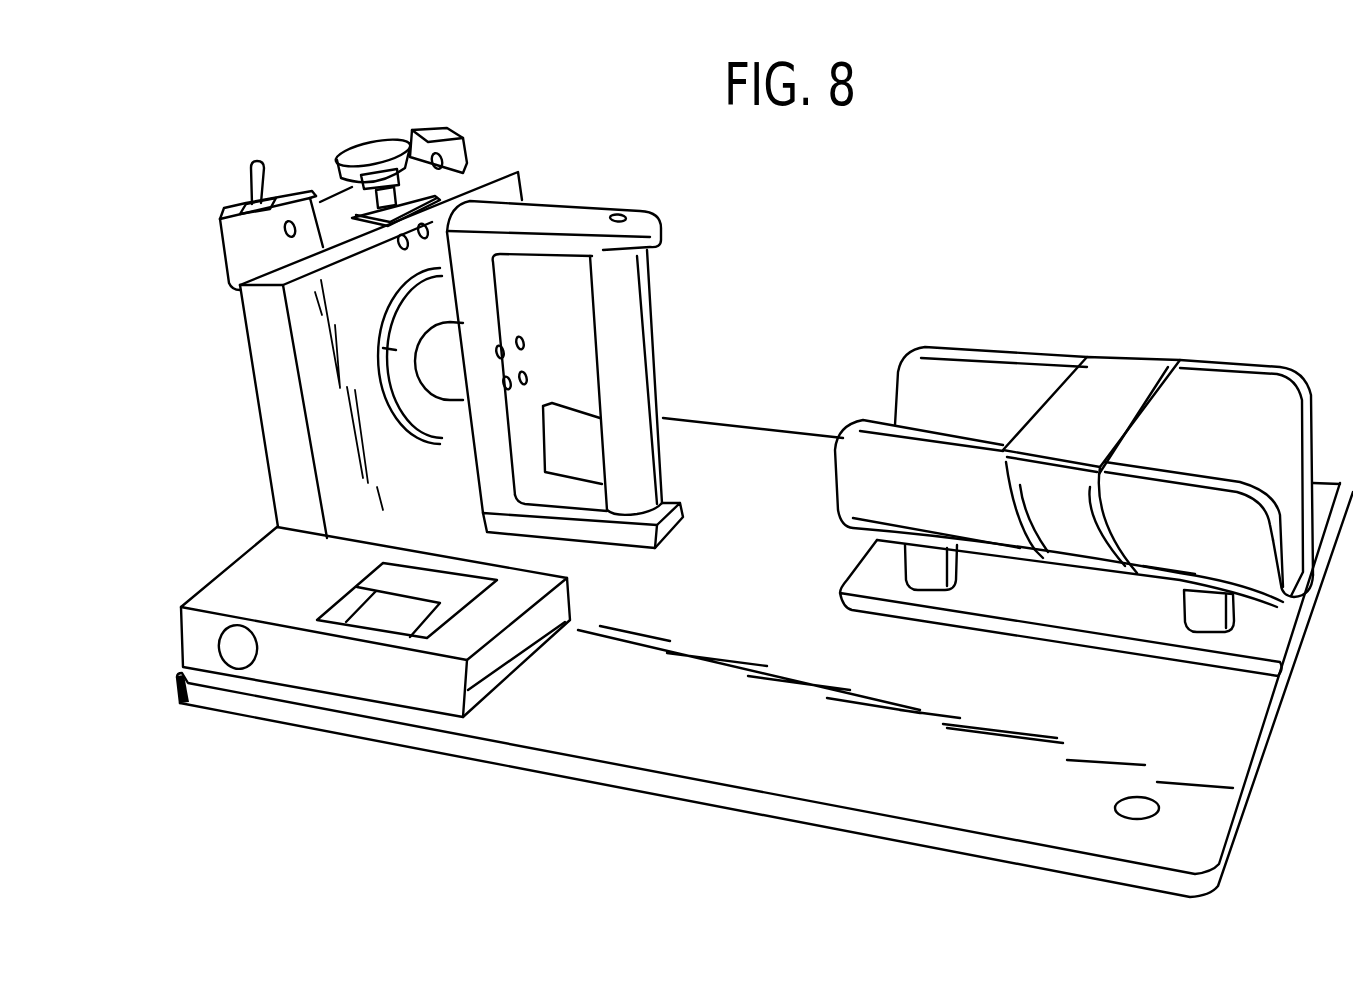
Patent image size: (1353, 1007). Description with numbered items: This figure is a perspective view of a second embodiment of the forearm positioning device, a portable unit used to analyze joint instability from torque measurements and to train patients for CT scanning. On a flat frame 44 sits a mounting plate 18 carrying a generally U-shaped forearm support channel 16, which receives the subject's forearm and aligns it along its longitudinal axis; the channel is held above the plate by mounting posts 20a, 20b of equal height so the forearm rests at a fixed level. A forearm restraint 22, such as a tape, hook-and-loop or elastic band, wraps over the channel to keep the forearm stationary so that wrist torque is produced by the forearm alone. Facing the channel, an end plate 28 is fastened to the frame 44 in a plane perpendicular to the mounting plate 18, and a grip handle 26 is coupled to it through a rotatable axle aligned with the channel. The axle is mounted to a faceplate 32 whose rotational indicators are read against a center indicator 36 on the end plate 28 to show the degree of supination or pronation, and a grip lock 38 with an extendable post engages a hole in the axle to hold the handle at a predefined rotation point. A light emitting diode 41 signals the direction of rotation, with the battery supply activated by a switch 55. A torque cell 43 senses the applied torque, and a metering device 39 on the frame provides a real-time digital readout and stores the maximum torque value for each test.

The forearm support channel 16 is at (1260, 362).
The mounting plate 18 is at (1053, 614).
The mounting post 20a is at (943, 596).
The mounting post 20b is at (1210, 632).
The forearm restraint 22 is at (1140, 357).
The grip handle 26 is at (663, 320).
The end plate 28 is at (446, 506).
The faceplate 32 is at (395, 290).
The center indicator 36 is at (433, 257).
The grip lock 38 is at (360, 140).
The metering device 39 is at (181, 640).
The light emitting diode 41 is at (288, 236).
The torque cell 43 is at (402, 420).
The frame 44 is at (753, 763).
The switch 55 is at (258, 165).